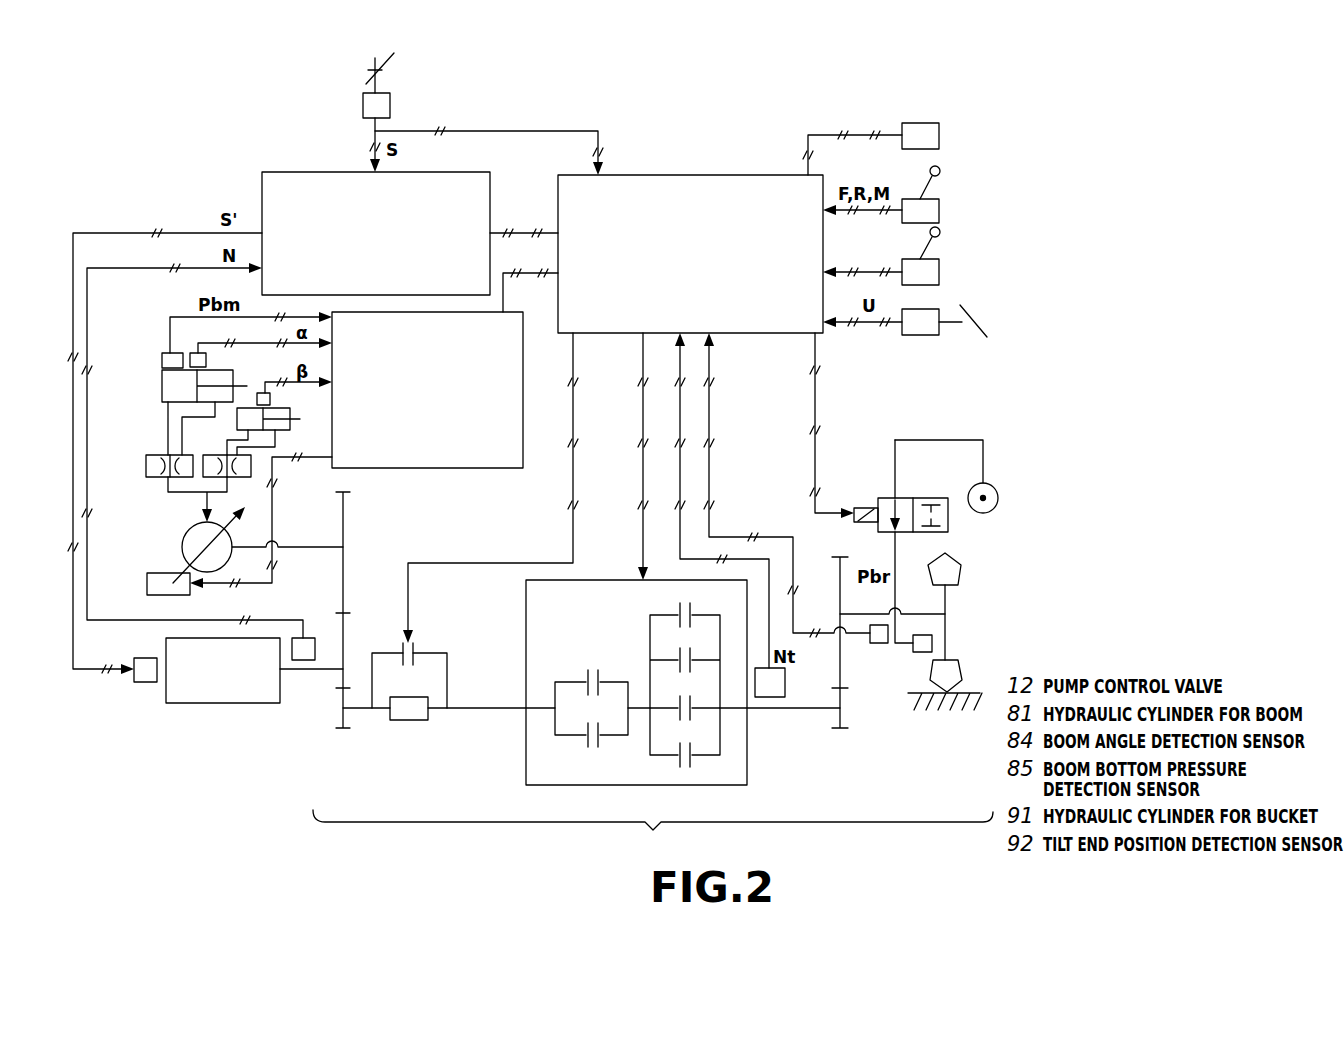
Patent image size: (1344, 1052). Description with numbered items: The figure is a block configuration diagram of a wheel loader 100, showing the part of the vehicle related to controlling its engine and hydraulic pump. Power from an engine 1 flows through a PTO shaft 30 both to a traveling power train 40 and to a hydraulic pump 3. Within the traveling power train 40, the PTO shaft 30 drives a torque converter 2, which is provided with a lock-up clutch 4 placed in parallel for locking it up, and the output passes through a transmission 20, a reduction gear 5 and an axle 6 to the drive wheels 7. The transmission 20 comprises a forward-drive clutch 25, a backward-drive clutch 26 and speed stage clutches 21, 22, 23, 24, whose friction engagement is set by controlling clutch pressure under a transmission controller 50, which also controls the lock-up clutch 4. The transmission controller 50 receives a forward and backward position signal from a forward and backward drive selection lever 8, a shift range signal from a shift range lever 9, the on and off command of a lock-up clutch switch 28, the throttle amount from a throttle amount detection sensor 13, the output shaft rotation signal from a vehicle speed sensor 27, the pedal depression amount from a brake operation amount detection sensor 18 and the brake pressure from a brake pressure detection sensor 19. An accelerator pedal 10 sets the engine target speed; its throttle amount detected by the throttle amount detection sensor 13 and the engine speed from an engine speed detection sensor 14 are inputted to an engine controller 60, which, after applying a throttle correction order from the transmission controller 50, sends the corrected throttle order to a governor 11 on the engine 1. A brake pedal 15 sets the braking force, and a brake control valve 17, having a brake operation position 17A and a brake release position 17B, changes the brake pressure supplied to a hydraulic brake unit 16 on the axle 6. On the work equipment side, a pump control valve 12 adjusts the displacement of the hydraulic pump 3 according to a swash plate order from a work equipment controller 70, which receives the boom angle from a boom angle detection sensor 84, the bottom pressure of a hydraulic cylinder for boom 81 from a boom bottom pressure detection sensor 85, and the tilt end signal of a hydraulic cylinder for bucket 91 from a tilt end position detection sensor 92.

The engine 1 is at (255, 703).
The torque converter 2 is at (404, 720).
The hydraulic pump 3 is at (182, 540).
The lock-up clutch 4 is at (420, 648).
The reduction gear 5 is at (840, 583).
The axle 6 is at (947, 612).
The drive wheels 7 is at (961, 575).
The forward and backward drive selection lever 8 is at (941, 171).
The shift range lever 9 is at (941, 232).
The accelerator pedal 10 is at (366, 72).
The governor 11 is at (146, 682).
The pump control valve 12 is at (147, 583).
The throttle amount detection sensor 13 is at (391, 101).
The engine speed detection sensor 14 is at (303, 638).
The brake pedal 15 is at (988, 335).
The brake unit 16 is at (913, 650).
The brake control valve 17 is at (1048, 541).
The brake operation position 17A is at (878, 498).
The brake release position 17B is at (921, 498).
The brake operation amount detection sensor 18 is at (920, 335).
The brake pressure detection sensor 19 is at (880, 643).
The transmission 20 is at (636, 698).
The speed stage clutch 21 is at (677, 762).
The speed stage clutch 22 is at (677, 715).
The speed stage clutch 23 is at (677, 655).
The speed stage clutch 24 is at (677, 608).
The forward-drive clutch 25 is at (585, 745).
The backward-drive clutch 26 is at (585, 675).
The vehicle speed sensor 27 is at (765, 697).
The lock-up clutch switch 28 is at (924, 123).
The PTO shaft 30 is at (343, 512).
The traveling power train 40 is at (653, 833).
The transmission controller 50 is at (675, 175).
The engine controller 60 is at (290, 172).
The work equipment controller 70 is at (523, 392).
The hydraulic cylinder for boom 81 is at (162, 386).
The boom angle detection sensor 84 is at (206, 362).
The boom bottom pressure detection sensor 85 is at (162, 360).
The hydraulic cylinder for bucket 91 is at (290, 430).
The tilt end position detection sensor 92 is at (270, 400).
The wheel loader 100 is at (722, 124).